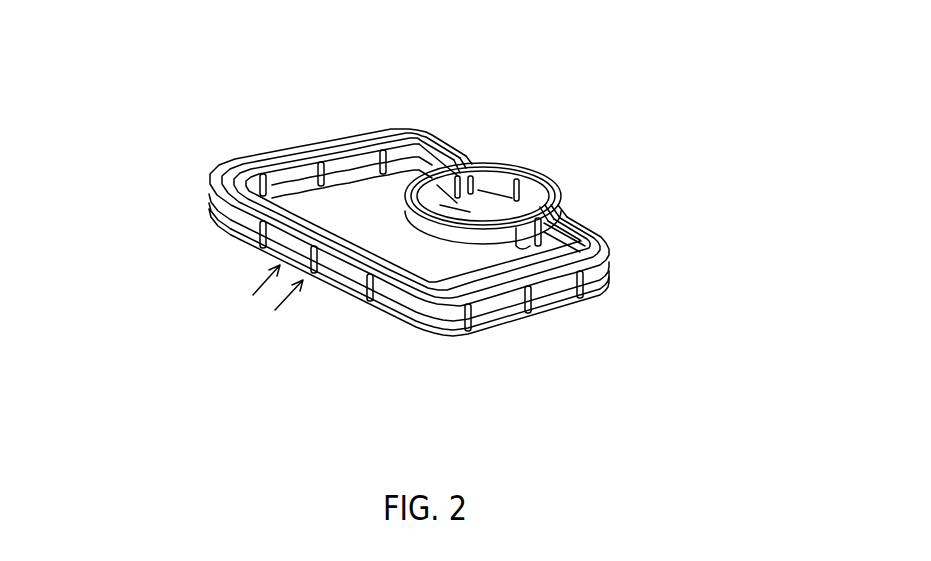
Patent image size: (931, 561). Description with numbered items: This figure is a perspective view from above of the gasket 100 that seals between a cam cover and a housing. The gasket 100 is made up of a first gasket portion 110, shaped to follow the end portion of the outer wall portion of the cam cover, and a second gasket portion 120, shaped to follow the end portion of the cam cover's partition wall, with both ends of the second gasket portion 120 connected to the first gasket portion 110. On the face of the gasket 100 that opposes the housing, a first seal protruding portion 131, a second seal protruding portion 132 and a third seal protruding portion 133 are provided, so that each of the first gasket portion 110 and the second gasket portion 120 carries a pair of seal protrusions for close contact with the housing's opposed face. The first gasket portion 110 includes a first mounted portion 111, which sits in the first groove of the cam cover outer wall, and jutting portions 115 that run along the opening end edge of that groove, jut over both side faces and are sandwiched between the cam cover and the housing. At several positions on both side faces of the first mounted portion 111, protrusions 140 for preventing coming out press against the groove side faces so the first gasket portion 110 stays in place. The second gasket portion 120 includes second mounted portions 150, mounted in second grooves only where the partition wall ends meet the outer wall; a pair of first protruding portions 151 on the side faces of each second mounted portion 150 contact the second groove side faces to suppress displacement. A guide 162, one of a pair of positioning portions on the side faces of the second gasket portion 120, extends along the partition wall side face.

The gasket 100 is at (617, 120).
The first gasket portion 110 is at (577, 315).
The first mounted portion 111 is at (487, 327).
The jutting portions 115 is at (223, 186).
The second gasket portion 120 is at (432, 256).
The first seal protruding portion 131 is at (233, 168).
The second seal protruding portion 132 is at (343, 153).
The third seal protruding portion 133 is at (494, 168).
The protrusions for preventing coming out 140 is at (272, 217).
The second mounted portion 150 is at (565, 206).
The first protruding portions 151 is at (552, 241).
The guide 162 is at (408, 225).